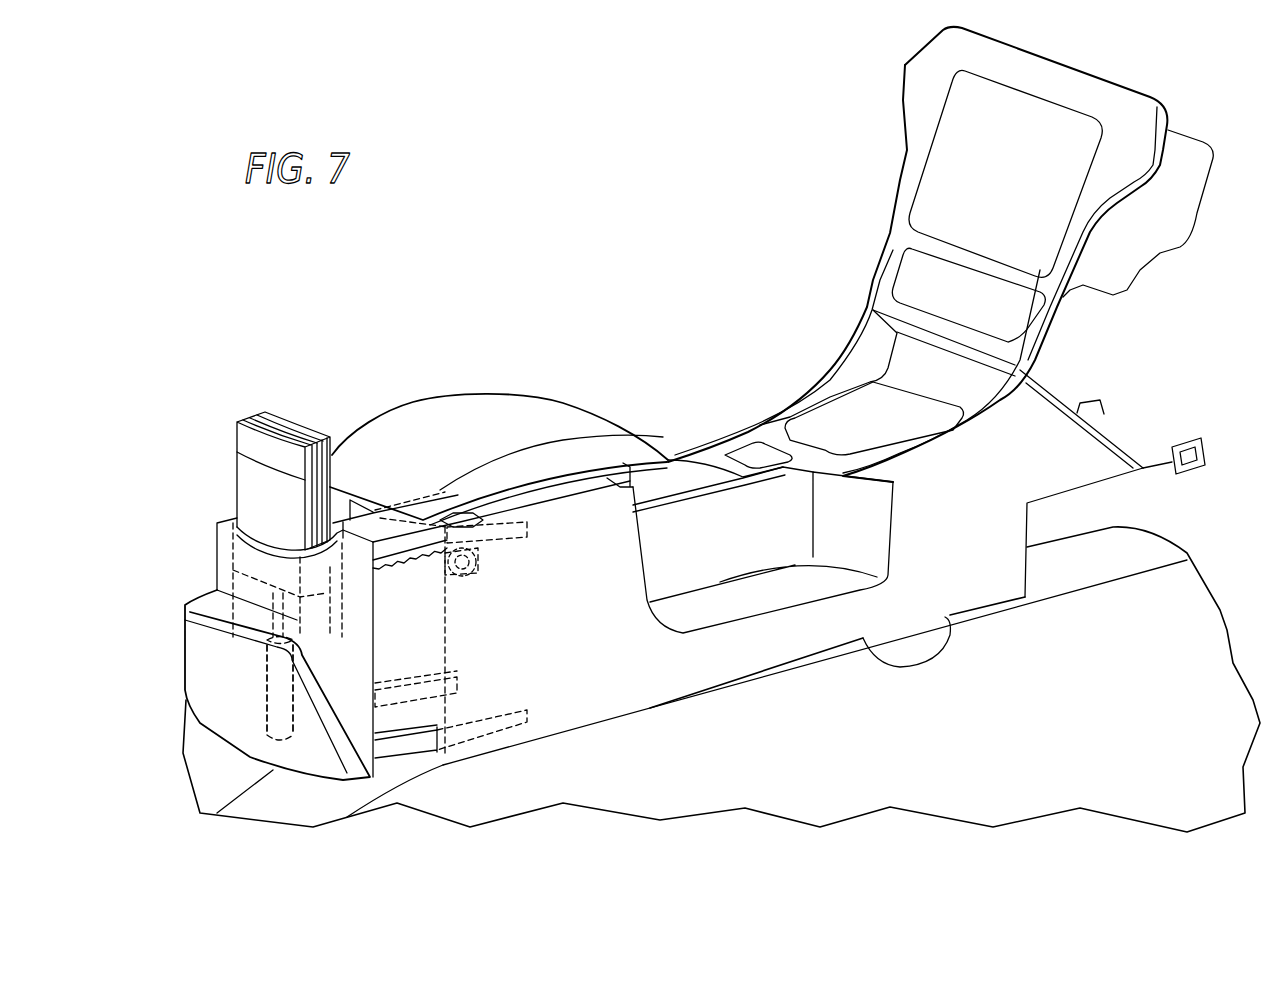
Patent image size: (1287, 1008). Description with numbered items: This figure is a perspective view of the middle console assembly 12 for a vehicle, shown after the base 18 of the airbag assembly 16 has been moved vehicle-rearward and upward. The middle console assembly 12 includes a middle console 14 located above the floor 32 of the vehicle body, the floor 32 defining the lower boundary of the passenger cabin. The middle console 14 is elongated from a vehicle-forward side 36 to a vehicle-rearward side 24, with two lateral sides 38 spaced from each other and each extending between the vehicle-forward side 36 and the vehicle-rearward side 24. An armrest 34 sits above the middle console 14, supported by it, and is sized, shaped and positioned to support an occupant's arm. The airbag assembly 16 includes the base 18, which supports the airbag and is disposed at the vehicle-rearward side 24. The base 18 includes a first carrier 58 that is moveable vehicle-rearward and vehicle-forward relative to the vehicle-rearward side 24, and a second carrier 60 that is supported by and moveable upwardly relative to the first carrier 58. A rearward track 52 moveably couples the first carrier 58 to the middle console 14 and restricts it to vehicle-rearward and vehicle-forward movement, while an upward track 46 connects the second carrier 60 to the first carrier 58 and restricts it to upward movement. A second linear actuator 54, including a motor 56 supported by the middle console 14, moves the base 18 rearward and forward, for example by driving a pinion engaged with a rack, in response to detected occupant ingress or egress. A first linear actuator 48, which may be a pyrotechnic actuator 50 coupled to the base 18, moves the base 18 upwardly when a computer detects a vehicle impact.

The middle console assembly 12 is at (561, 293).
The middle console 14 is at (582, 678).
The airbag assembly 16 is at (250, 393).
The base 18 is at (268, 468).
The vehicle-rearward side 24 is at (223, 560).
The floor 32 is at (303, 800).
The armrest 34 is at (395, 425).
The vehicle-forward side 36 is at (643, 560).
The lateral sides 38 is at (590, 564).
The upward track 46 is at (215, 575).
The first linear actuator 48 is at (265, 722).
The pyrotechnic actuator 50 is at (185, 690).
The rearward track 52 is at (510, 518).
The second linear actuator 54 is at (473, 578).
The motor 56 is at (510, 589).
The first carrier 58 is at (267, 498).
The second carrier 60 is at (222, 672).